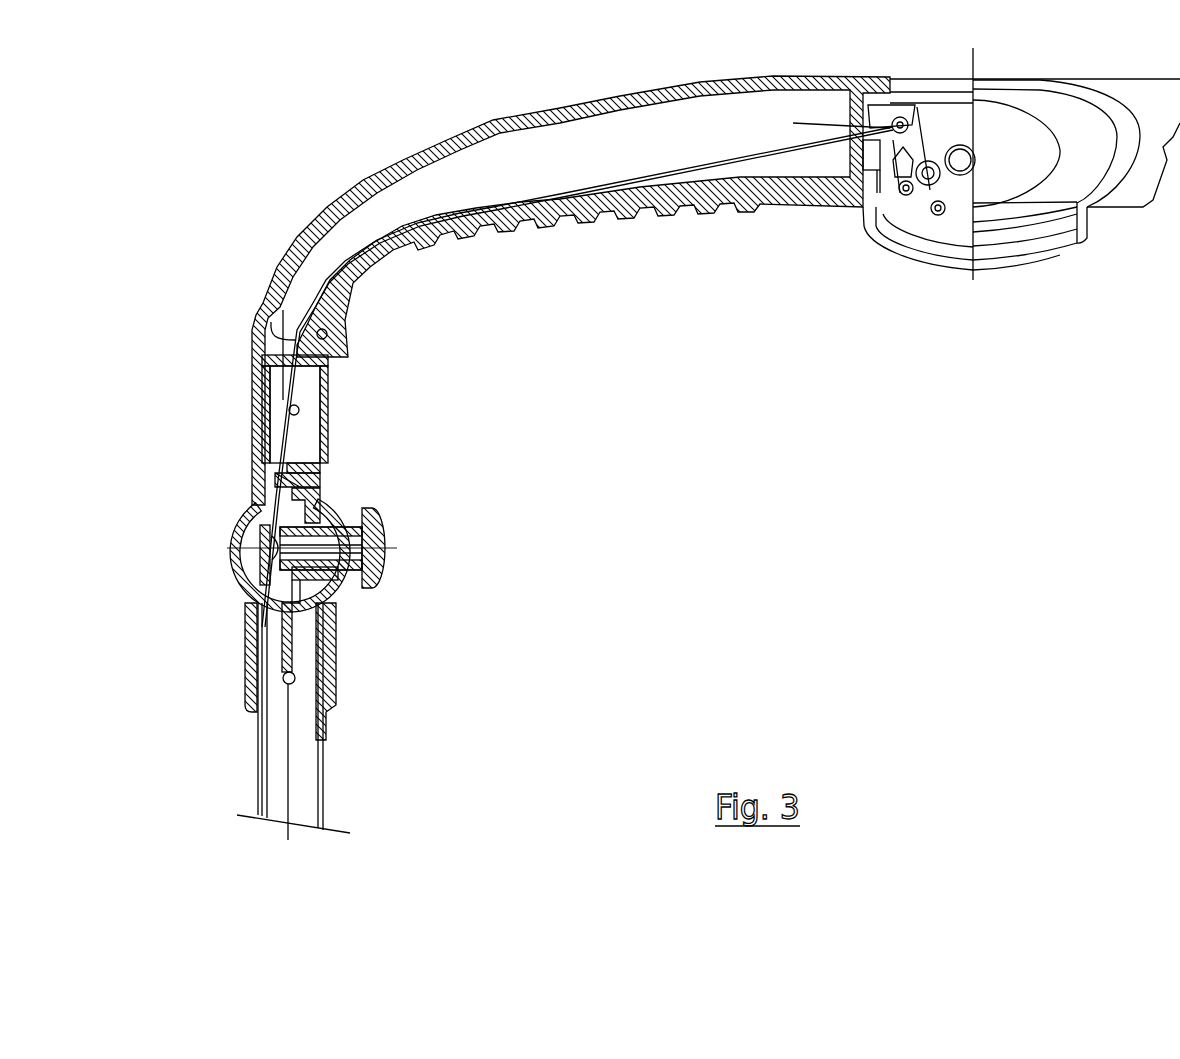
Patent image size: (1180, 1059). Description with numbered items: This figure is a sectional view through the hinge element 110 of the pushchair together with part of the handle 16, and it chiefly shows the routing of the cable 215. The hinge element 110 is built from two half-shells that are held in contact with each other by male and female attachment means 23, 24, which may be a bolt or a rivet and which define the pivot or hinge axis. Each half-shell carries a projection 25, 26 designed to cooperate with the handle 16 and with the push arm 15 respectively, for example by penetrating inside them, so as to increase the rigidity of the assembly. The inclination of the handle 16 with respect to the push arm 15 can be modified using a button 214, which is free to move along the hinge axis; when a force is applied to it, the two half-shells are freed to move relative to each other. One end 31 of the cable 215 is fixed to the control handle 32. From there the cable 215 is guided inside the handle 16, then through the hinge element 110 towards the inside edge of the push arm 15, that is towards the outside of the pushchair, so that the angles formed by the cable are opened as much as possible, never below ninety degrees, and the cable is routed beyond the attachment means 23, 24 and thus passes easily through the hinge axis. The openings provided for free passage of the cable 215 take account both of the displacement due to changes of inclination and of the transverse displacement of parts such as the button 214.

The push arm 15 is at (320, 780).
The handle 16 is at (377, 277).
The male attachment means 23 is at (238, 578).
The female attachment means 24 is at (383, 520).
The projection 25 is at (338, 398).
The projection 26 is at (336, 660).
The end of the cable 31 is at (866, 133).
The control handle 32 is at (905, 233).
The hinge element 110 is at (348, 496).
The button 214 is at (232, 520).
The cable 215 is at (340, 272).